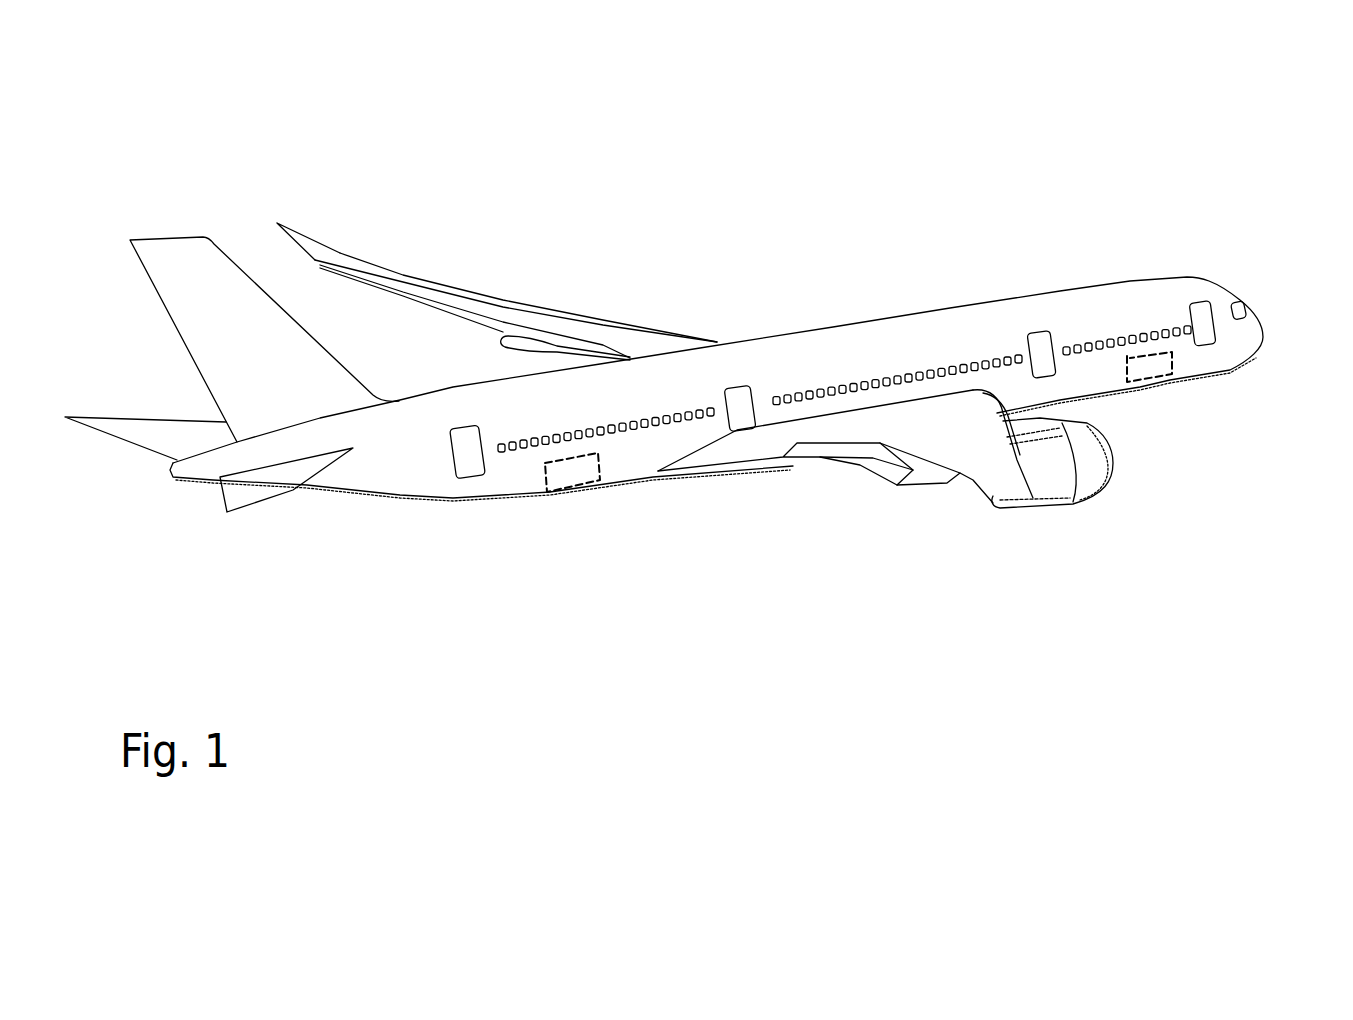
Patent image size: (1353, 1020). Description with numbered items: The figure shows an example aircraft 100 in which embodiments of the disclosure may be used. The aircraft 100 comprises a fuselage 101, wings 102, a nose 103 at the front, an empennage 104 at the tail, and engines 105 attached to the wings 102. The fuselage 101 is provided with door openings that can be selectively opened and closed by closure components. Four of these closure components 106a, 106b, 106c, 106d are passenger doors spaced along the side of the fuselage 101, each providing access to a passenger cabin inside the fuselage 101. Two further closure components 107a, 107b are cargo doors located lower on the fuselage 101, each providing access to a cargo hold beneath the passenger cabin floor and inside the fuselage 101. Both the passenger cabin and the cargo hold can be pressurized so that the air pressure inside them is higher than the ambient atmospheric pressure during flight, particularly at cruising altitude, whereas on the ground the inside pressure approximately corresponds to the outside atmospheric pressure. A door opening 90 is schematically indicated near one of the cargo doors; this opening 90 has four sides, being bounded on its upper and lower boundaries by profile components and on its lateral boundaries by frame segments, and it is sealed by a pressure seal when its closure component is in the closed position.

The aircraft 100 is at (665, 178).
The fuselage 101 is at (1113, 298).
The wings 102 is at (517, 310).
The nose 103 is at (1270, 302).
The empennage 104 is at (200, 213).
The engines 105 is at (1095, 475).
The closure component 106a is at (1202, 308).
The closure component 106b is at (1042, 342).
The closure component 106c is at (740, 393).
The closure component 106d is at (468, 465).
The closure component 107a is at (1153, 367).
The closure component 107b is at (587, 473).
The door opening 90 is at (552, 478).